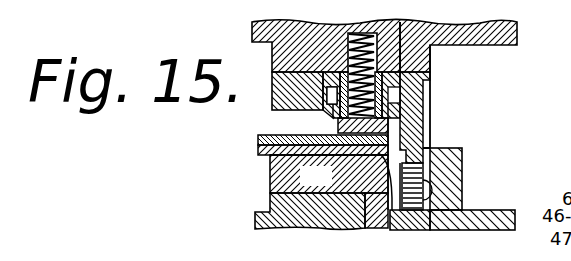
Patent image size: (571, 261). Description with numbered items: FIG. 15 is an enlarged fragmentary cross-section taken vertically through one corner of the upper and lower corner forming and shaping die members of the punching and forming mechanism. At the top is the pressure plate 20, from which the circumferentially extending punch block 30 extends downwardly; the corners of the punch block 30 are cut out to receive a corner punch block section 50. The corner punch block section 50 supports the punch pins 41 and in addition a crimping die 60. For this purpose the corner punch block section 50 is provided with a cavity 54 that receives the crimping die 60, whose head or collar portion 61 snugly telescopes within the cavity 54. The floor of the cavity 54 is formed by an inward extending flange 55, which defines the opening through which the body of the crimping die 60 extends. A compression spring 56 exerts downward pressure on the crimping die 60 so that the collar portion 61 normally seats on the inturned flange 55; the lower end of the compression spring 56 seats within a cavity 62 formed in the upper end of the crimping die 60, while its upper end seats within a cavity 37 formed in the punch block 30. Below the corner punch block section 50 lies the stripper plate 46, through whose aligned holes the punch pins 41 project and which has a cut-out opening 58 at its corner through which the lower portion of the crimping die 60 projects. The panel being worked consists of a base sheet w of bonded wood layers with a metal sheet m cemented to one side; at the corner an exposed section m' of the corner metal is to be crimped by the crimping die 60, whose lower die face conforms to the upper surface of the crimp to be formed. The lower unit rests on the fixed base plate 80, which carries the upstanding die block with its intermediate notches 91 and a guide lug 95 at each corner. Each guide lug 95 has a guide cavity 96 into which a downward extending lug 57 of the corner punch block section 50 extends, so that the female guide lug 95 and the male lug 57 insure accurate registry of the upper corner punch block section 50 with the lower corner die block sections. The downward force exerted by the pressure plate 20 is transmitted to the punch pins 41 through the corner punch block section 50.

The pressure plate 20 is at (517, 33).
The punch block 30 is at (418, 58).
The cavity 37 is at (364, 33).
The compression spring 56 is at (357, 33).
The head portion 61 is at (402, 30).
The cavity 62 is at (338, 62).
The corner punch block section 50 is at (260, 103).
The inward extending flange 55 is at (328, 108).
The cavity 54 is at (395, 90).
The crimping die 60 is at (373, 121).
The downward extending lug 57 is at (430, 132).
The stripper plate 46 is at (258, 140).
The base sheet w is at (257, 150).
The cut-out opening 58 is at (329, 174).
The metal sheet m is at (304, 182).
The punch pins 41 is at (292, 227).
The intermediate notches 91 is at (377, 229).
The exposed corner section of metal sheet m' is at (405, 179).
The guide cavity 96 is at (447, 213).
The guide lug 95 is at (452, 180).
The fixed base plate 80 is at (493, 209).